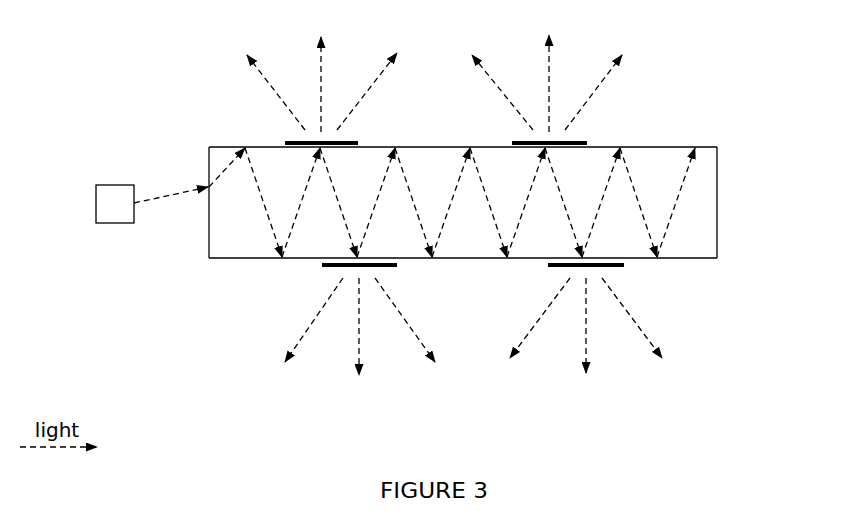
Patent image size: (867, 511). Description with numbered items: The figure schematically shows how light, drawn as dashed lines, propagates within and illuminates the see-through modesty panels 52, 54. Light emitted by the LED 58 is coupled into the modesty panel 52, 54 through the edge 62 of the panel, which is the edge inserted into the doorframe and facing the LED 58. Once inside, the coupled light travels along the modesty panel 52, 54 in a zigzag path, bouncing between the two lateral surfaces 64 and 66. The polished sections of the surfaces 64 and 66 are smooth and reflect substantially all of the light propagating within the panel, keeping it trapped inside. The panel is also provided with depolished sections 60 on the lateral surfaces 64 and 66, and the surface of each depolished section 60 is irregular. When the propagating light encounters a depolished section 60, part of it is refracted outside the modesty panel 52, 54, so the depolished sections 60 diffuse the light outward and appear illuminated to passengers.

The modesty panel 52 is at (698, 262).
The modesty panel 54 is at (758, 253).
The LED 58 is at (115, 202).
The depolished sections 60 is at (288, 140).
The edge of the modesty panel 62 is at (188, 243).
The lateral surface 64 is at (680, 125).
The lateral surface 66 is at (682, 283).